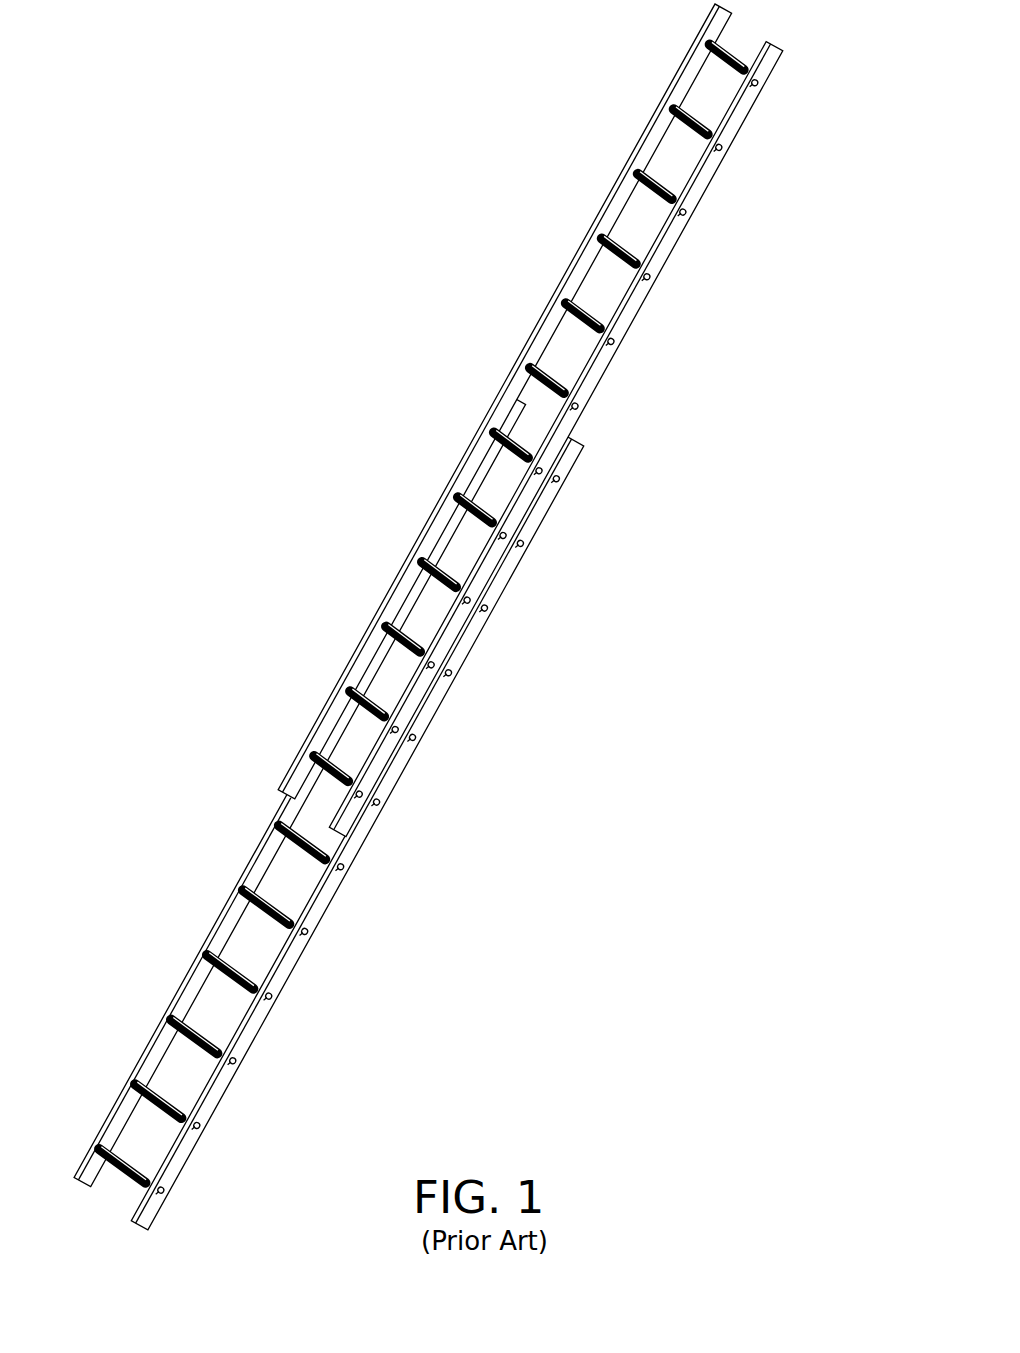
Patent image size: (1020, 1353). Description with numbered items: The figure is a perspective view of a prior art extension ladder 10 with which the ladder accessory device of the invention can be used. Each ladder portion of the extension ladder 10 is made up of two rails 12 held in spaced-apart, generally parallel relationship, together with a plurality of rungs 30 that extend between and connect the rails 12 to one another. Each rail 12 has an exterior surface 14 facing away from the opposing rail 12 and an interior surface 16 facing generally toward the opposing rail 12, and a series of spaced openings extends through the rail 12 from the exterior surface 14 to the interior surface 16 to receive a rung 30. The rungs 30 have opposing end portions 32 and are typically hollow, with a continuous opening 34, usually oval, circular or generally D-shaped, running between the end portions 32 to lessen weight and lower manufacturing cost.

The extension ladder 10 is at (431, 617).
The rail 12 is at (431, 617).
The exterior surface 14 is at (431, 617).
The interior surface 16 is at (427, 614).
The rung 30 is at (428, 612).
The end portion 32 is at (385, 767).
The continuous opening 34 is at (421, 702).